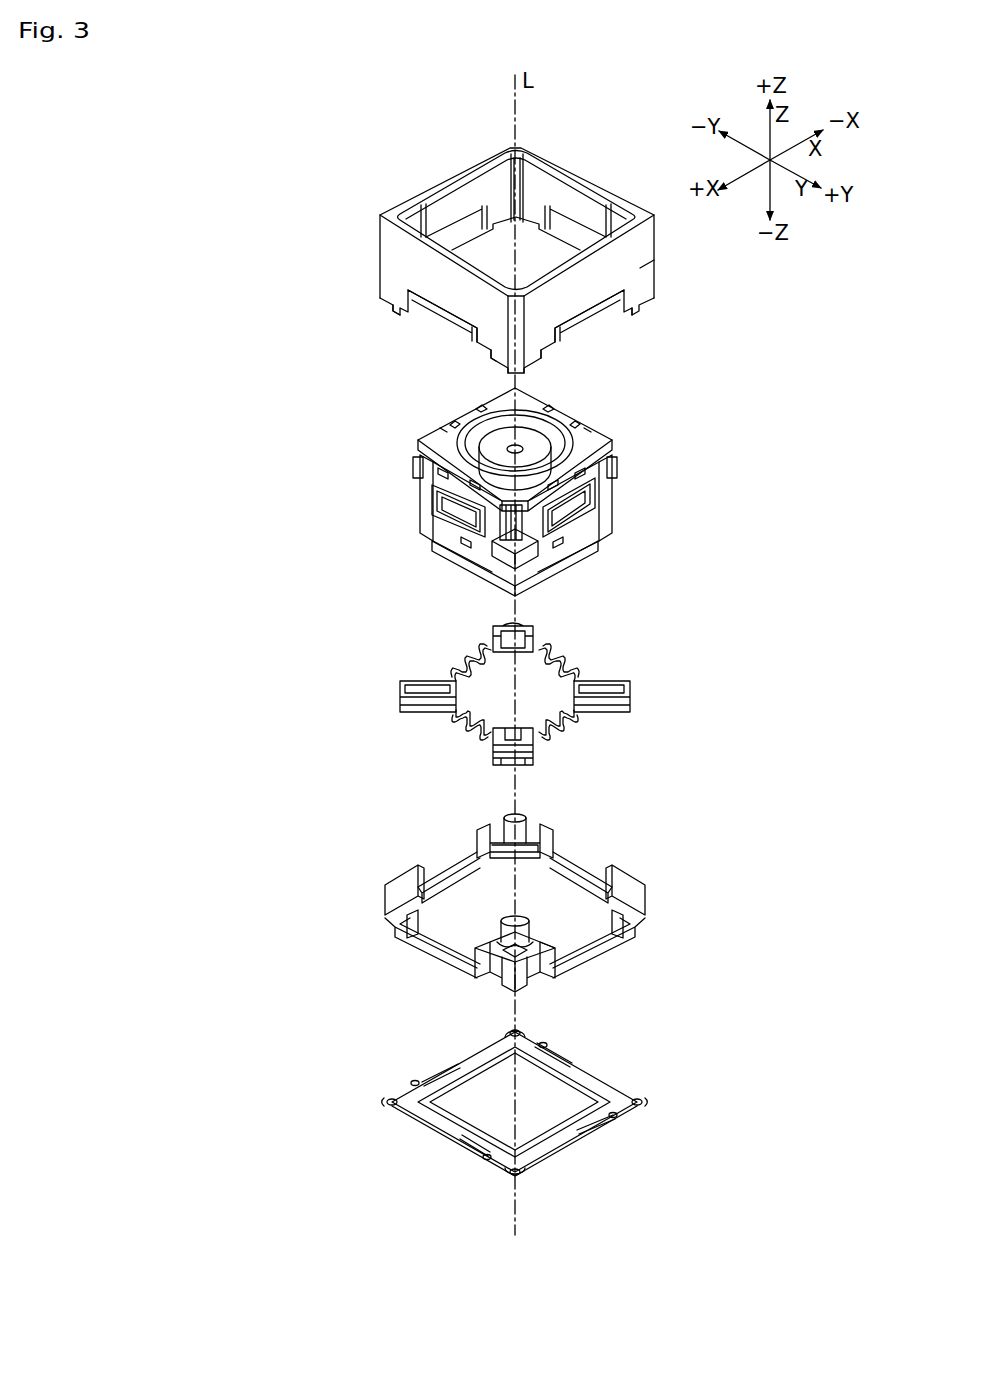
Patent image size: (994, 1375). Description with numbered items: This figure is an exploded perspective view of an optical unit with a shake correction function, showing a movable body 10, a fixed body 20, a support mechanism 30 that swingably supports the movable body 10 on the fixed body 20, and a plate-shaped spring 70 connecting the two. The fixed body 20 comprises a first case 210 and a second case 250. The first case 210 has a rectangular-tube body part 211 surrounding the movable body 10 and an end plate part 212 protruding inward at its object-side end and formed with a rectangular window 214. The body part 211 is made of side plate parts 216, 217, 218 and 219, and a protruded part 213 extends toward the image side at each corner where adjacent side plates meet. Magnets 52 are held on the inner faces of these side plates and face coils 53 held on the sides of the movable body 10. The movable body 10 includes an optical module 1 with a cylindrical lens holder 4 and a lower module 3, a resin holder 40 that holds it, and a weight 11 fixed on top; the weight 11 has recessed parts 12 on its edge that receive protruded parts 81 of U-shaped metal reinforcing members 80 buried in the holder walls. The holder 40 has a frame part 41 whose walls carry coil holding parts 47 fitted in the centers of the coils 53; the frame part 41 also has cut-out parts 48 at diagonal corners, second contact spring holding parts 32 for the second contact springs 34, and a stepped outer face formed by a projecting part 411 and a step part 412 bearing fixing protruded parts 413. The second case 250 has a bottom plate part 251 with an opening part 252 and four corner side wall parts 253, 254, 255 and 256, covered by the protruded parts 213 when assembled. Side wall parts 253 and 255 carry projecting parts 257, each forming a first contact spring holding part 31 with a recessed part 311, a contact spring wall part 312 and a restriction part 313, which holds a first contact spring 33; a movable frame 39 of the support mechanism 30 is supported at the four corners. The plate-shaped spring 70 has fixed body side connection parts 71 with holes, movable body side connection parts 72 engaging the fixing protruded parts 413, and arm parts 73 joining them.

The fixed body 20 is at (238, 210).
The first case 210 is at (368, 228).
The body part 211 is at (378, 250).
The end plate part 212 is at (410, 197).
The protruded part 213 is at (643, 290).
The rectangular window 214 is at (502, 157).
The side plate part 216 is at (417, 278).
The side plate part 217 is at (620, 216).
The side plate part 218 is at (640, 261).
The side plate part 219 is at (492, 175).
The magnet 52 is at (447, 205).
The movable body 10 is at (652, 489).
The weight 11 is at (622, 442).
The recessed part 12 is at (453, 423).
The lens holder 4 is at (530, 437).
The second contact spring holding part 32 is at (415, 468).
The reinforcing member 80 is at (506, 450).
The protruded part 81 is at (582, 468).
The holder 40 is at (532, 536).
The frame part 41 is at (597, 519).
The coil 53 is at (445, 488).
The coil holding part 47 is at (453, 511).
The optical module 1 is at (559, 568).
The lower module 3 is at (593, 546).
The cut-out part 48 is at (520, 549).
The projecting part 411 is at (487, 543).
The step part 412 is at (497, 541).
The fixing protruded part 413 is at (467, 541).
The support mechanism 30 is at (534, 699).
The movable frame 39 is at (605, 716).
The first contact spring 33 is at (522, 645).
The second contact spring 34 is at (410, 690).
The second case 250 is at (368, 905).
The bottom plate part 251 is at (597, 951).
The opening part 252 is at (567, 886).
The side wall part 253 is at (543, 966).
The side wall part 254 is at (397, 914).
The side wall part 255 is at (553, 844).
The side wall part 256 is at (650, 908).
The projecting part 257 is at (503, 853).
The first contact spring holding part 31 is at (386, 946).
The recessed part 311 is at (503, 947).
The contact spring wall part 312 is at (503, 830).
The restriction part 313 is at (510, 954).
The plate-shaped spring 70 is at (619, 1134).
The fixed body side connection part 71 is at (520, 1031).
The movable body side connection part 72 is at (563, 1127).
The arm part 73 is at (603, 1095).